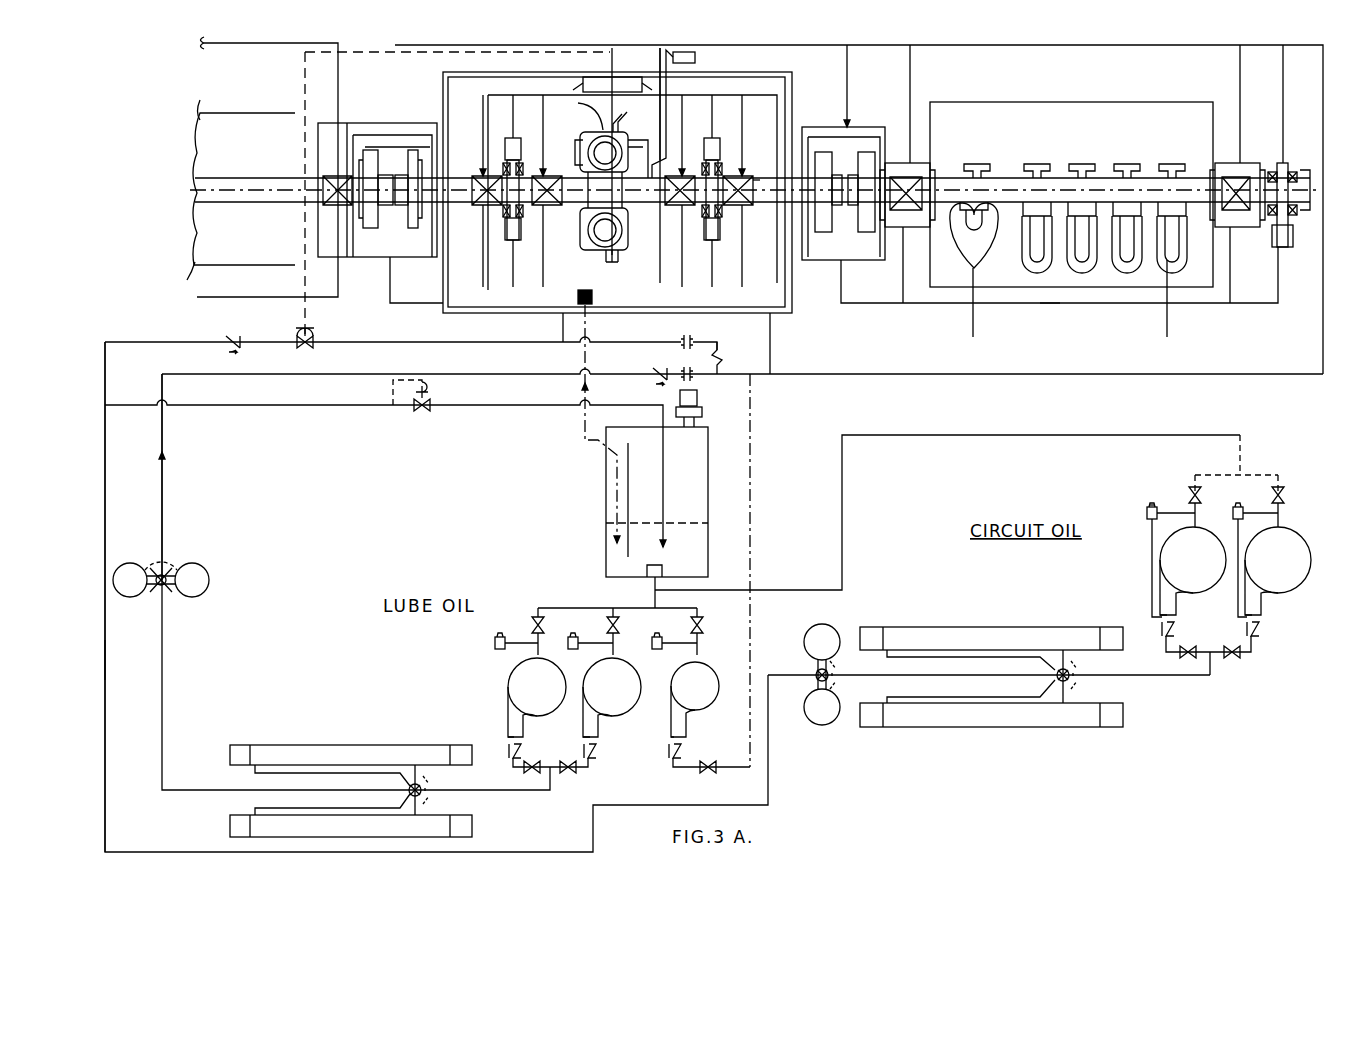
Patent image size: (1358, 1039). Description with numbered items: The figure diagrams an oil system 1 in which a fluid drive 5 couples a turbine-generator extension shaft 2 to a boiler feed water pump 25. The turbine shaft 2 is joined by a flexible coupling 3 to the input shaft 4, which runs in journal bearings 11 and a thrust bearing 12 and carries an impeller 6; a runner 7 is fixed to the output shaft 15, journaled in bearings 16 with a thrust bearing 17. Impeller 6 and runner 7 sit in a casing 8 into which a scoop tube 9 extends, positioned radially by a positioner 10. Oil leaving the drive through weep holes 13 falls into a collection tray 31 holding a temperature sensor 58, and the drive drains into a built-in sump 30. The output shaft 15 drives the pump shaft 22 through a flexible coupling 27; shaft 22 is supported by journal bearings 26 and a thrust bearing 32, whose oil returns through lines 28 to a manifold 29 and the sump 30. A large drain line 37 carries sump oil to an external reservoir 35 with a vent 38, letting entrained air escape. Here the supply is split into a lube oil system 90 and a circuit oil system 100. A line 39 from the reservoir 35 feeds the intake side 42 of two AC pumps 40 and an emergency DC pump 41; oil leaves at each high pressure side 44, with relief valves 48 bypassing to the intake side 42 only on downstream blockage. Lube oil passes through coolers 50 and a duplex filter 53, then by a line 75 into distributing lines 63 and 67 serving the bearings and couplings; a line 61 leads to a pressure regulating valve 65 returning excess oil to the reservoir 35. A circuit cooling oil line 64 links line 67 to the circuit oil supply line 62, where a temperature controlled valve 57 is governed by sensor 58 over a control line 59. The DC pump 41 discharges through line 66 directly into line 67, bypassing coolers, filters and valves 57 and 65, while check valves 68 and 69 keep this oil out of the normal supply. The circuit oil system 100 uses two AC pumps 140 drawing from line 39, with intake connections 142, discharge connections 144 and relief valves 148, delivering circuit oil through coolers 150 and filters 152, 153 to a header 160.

The system 1 is at (129, 660).
The turbine-generator extension shaft 2 is at (250, 178).
The flexible coupling 3 is at (391, 162).
The input shaft 4 is at (450, 175).
The fluid drive 5 is at (602, 130).
The impeller 6 is at (590, 252).
The runner 7 is at (608, 258).
The casing 8 is at (626, 114).
The scoop tube 9 is at (660, 155).
The positioner 10 is at (695, 58).
The journal bearings 11 is at (535, 157).
The thrust bearing 12 is at (513, 191).
The weep holes 13 is at (577, 112).
The output shaft 15 is at (755, 170).
The journal bearings 16 is at (740, 157).
The thrust bearing 17 is at (712, 191).
The shaft 22 is at (1013, 210).
The boiler feed water pump 25 is at (1077, 85).
The journal bearings 26 is at (1243, 158).
The flexible coupling 27 is at (835, 162).
The lines 28 is at (1281, 272).
The manifold 29 is at (1046, 298).
The sump 30 is at (617, 180).
The collection tray 31 is at (612, 85).
The thrust bearing 32 is at (1282, 146).
The external reservoir 35 is at (646, 426).
The drain line 37 is at (585, 428).
The vent 38 is at (702, 400).
The line 39 is at (650, 592).
The A.C. pumps 40 is at (520, 660).
The D.C. powered oil pump 41 is at (715, 668).
The intake side 42 is at (705, 637).
The high pressure side 44 is at (690, 738).
The relief valve 48 is at (647, 635).
The cooler 50 is at (470, 845).
The duplex filter 53 is at (161, 587).
The temperature controlled valve 57 is at (316, 325).
The temperature sensor 58 is at (616, 68).
The conductor or line 59 is at (358, 50).
The line 61 is at (313, 405).
The supply line 62 is at (770, 769).
The line 63 is at (313, 374).
The circuit cooling oil line 64 is at (700, 340).
The pressure control valve 65 is at (428, 400).
The line 66 is at (750, 628).
The line 67 is at (1012, 374).
The check valve 68 is at (656, 372).
The check valve 69 is at (236, 336).
The line 75 is at (166, 480).
The lubricating oil system 90 is at (522, 617).
The circuit oil system 100 is at (1140, 510).
The AC pumps 140 is at (1306, 597).
The suction valve 142 is at (1275, 525).
The discharge check valve 144 is at (1265, 625).
The relief valves 148 is at (1228, 510).
The coolers 150 is at (1015, 730).
The filter 152 is at (822, 620).
The filters 153 is at (815, 728).
The header 160 is at (112, 507).